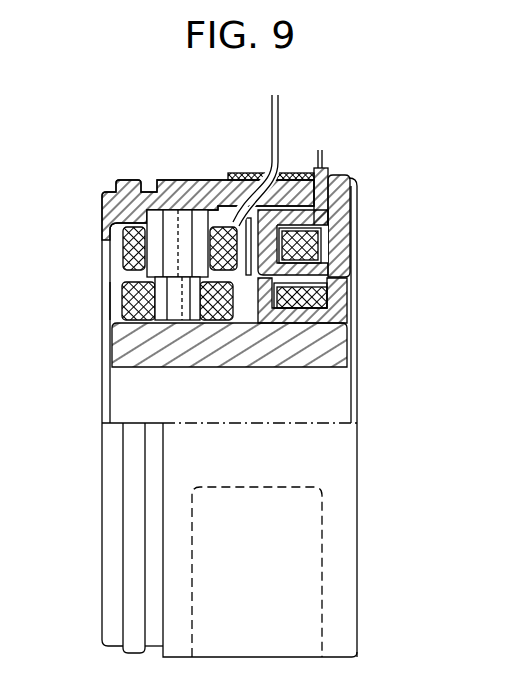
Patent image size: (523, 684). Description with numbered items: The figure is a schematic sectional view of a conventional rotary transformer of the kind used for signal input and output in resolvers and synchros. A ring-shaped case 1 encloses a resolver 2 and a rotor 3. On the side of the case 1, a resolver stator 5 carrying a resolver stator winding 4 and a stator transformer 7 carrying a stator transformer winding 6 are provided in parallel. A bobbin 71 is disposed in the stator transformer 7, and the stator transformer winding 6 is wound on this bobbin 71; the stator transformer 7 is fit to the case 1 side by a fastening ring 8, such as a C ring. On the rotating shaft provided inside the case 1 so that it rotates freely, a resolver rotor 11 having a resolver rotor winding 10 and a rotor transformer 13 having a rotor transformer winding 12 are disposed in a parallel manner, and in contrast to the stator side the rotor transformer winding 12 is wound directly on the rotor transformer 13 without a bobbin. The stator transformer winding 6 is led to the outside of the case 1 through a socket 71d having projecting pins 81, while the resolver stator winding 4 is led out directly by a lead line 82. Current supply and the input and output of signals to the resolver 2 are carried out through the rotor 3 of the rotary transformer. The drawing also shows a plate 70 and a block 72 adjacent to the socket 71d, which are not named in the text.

The case 1 is at (102, 199).
The resolver 2 is at (116, 291).
The rotor 3 is at (347, 288).
The resolver stator winding 4 is at (128, 226).
The resolver stator 5 is at (165, 254).
The stator transformer winding 6 is at (300, 241).
The stator transformer 7 is at (352, 262).
The fastening ring 8 is at (357, 193).
The resolver rotor winding 10 is at (132, 300).
The resolver rotor 11 is at (180, 308).
The rotor transformer winding 12 is at (332, 283).
The rotor transformer 13 is at (310, 300).
The circuit board 70 is at (294, 174).
The bobbin 71 is at (288, 265).
The socket 71d is at (326, 169).
The holder block 72 is at (338, 243).
The projecting pins 81 is at (322, 149).
The lead line 82 is at (275, 96).